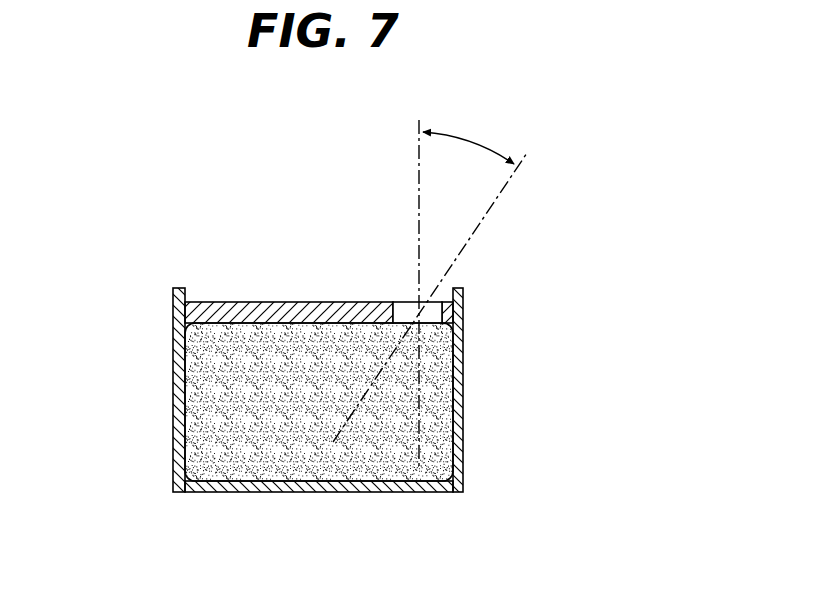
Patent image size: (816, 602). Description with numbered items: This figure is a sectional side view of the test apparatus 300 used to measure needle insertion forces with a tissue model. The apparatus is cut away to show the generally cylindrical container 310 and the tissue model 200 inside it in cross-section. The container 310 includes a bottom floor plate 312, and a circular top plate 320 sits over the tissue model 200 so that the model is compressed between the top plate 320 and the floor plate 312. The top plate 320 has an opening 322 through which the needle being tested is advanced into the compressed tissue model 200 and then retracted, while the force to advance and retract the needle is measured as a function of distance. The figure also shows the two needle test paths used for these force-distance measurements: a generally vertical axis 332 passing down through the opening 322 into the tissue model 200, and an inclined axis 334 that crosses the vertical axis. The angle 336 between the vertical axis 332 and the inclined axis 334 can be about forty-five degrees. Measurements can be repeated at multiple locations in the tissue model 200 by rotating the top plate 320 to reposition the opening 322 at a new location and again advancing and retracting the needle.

The test apparatus 300 is at (216, 186).
The container 310 is at (174, 345).
The bottom floor plate 312 is at (233, 494).
The top plate 320 is at (222, 301).
The opening 322 is at (389, 294).
The tissue model 200 is at (222, 408).
The axis 332 is at (418, 163).
The inclined axis 334 is at (500, 190).
The angle 336 is at (467, 133).